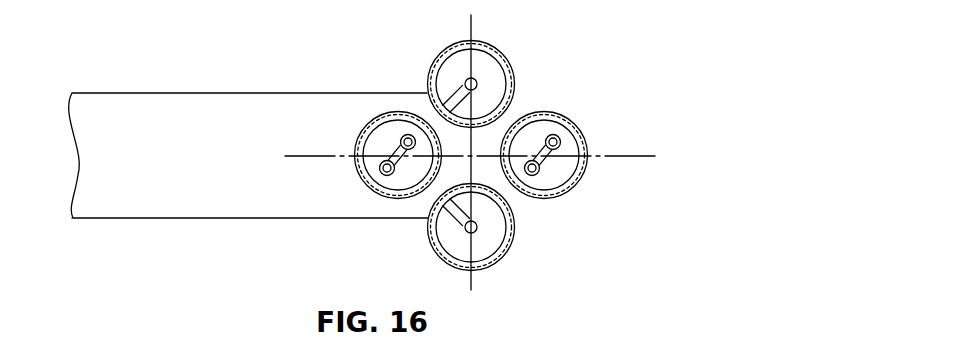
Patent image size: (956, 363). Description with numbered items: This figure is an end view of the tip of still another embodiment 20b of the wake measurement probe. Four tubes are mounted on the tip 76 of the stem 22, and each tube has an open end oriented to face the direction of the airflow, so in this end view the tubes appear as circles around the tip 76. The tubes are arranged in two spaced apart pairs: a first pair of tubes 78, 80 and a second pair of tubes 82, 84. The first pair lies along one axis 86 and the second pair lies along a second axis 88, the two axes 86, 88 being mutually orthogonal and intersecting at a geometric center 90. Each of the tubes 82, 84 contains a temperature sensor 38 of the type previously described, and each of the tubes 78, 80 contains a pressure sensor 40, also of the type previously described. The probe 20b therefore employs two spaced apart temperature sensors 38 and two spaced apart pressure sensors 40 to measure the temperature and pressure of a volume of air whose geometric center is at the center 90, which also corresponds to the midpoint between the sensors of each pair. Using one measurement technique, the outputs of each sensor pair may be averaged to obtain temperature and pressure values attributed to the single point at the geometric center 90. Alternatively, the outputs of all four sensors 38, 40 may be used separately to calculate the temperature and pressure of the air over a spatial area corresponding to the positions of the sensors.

The wake measurement probe 20b is at (598, 89).
The stem 22 is at (191, 122).
The temperature sensor 38 is at (382, 130).
The pressure sensor 40 is at (438, 70).
The tip 76 is at (544, 214).
The tube 78 is at (507, 71).
The tube 80 is at (495, 240).
The tube 82 is at (356, 149).
The tube 84 is at (562, 168).
The axis 86 is at (477, 277).
The axis 88 is at (617, 156).
The geometric center 90 is at (462, 162).